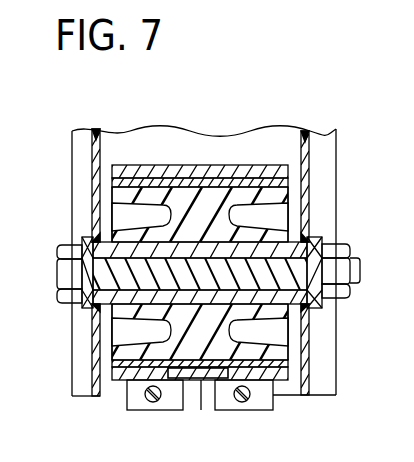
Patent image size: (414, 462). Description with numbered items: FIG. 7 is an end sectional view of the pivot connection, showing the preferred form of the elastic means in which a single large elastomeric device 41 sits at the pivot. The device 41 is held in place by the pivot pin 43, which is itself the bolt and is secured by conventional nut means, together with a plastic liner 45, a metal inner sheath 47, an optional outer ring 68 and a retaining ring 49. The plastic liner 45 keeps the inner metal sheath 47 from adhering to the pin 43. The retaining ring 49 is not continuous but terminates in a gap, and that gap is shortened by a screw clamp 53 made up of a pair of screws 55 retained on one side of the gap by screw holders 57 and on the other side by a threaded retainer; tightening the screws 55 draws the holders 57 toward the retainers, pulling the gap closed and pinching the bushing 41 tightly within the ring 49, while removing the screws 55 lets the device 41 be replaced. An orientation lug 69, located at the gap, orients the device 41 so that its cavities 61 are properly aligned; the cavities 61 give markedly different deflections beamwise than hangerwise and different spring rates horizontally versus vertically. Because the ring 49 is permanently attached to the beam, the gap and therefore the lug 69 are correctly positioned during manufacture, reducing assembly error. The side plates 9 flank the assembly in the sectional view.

The side plate 9 is at (96, 130).
The elastomeric device 41 is at (225, 200).
The pivot pin 43 is at (92, 273).
The plastic liner 45 is at (308, 234).
The metal inner sheath 47 is at (312, 305).
The retaining ring 49 is at (150, 172).
The screw clamp 53 is at (212, 407).
The screws 55 is at (152, 403).
The screw holders 57 is at (137, 401).
The cavities 61 is at (136, 226).
The outer ring 68 is at (214, 187).
The orientation lug 69 is at (203, 410).